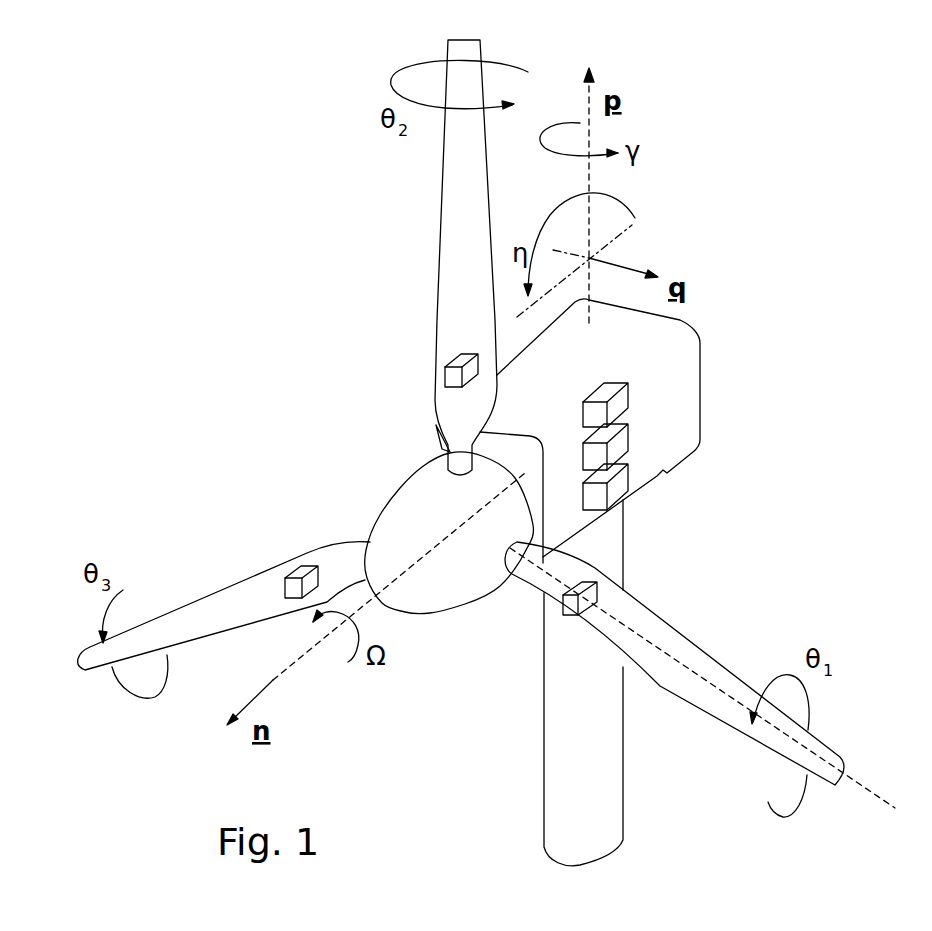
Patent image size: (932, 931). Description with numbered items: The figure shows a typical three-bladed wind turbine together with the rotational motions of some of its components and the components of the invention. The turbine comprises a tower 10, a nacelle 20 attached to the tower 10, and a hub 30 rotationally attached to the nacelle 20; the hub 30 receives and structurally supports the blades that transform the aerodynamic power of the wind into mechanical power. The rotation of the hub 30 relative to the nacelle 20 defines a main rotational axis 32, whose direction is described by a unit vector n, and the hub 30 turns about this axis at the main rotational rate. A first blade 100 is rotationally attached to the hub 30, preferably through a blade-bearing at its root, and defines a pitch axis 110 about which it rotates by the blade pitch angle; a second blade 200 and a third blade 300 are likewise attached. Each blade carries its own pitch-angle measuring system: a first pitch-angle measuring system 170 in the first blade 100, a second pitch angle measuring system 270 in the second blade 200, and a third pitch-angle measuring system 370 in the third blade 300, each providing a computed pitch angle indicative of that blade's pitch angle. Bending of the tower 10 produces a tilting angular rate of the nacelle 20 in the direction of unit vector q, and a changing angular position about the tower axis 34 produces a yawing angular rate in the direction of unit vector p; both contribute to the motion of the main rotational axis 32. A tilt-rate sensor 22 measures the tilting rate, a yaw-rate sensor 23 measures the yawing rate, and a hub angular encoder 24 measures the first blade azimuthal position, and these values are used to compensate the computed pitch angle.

The tower 10 is at (553, 812).
The nacelle 20 is at (705, 375).
The tilt-rate sensor 22 is at (628, 492).
The yaw-rate sensor 23 is at (628, 440).
The hub angular encoder 24 is at (628, 398).
The hub 30 is at (408, 518).
The main rotational axis 32 is at (327, 663).
The tower axis 34 is at (596, 205).
The first blade 100 is at (697, 648).
The pitch axis 110 is at (858, 788).
The first pitch-angle measuring system 170 is at (642, 605).
The second blade 200 is at (447, 217).
The second pitch angle measuring system 270 is at (445, 382).
The third blade 300 is at (203, 590).
The third pitch-angle measuring system 370 is at (306, 565).